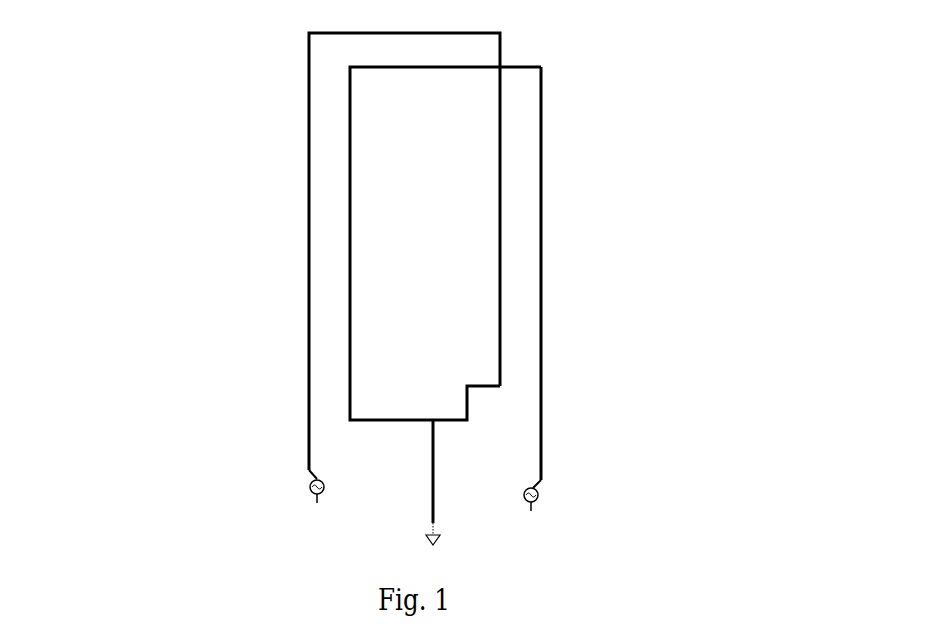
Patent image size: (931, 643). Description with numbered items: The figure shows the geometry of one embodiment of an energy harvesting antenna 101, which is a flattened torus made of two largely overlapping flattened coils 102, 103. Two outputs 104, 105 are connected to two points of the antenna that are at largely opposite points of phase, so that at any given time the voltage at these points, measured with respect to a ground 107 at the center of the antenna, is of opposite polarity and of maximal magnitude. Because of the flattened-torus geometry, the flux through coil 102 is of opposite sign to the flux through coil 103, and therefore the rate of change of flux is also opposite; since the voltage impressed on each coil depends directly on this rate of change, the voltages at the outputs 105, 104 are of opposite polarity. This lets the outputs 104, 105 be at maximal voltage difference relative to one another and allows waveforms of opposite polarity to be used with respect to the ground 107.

The antenna 101 is at (569, 97).
The coil 102 is at (504, 195).
The coil 103 is at (546, 270).
The output 104 is at (542, 489).
The output 105 is at (310, 474).
The ground 107 is at (428, 518).